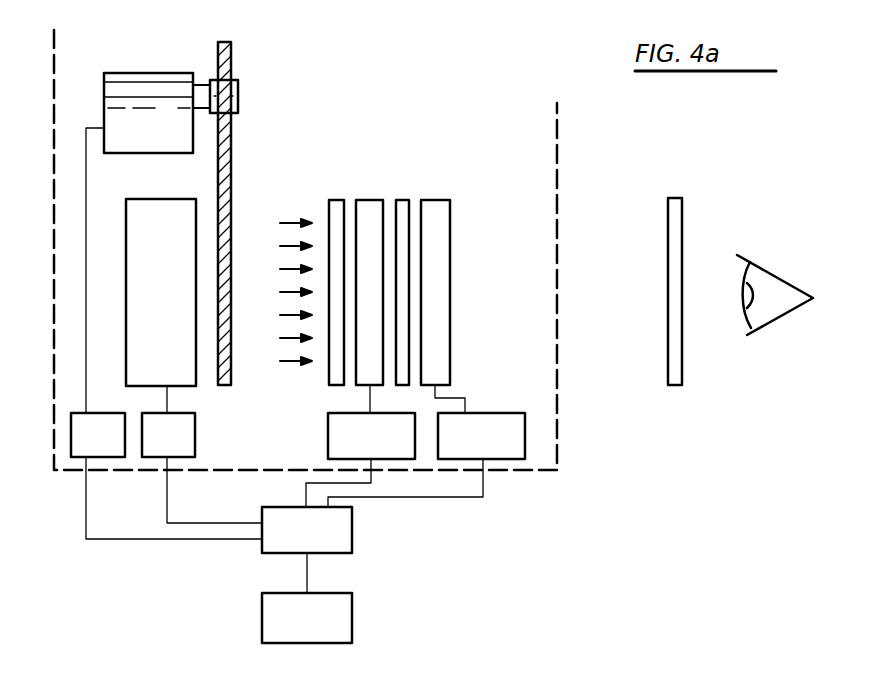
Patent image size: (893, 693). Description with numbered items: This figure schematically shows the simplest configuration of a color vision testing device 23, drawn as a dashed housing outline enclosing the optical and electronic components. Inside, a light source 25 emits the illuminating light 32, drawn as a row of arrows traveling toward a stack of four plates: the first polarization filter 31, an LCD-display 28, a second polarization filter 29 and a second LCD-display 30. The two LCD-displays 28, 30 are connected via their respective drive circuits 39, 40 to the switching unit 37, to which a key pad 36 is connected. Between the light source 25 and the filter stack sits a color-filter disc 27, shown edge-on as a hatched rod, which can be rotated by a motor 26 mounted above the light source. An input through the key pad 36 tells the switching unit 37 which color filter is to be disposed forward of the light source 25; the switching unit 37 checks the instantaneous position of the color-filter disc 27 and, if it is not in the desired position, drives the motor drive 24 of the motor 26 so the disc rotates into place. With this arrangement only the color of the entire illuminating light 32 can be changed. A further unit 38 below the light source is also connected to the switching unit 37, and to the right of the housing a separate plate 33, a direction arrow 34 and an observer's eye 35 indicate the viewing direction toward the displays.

The color vision testing device 23 is at (54, 278).
The motor drive 24 is at (114, 449).
The light source 25 is at (160, 208).
The motor 26 is at (148, 77).
The color-filter disc 27 is at (232, 213).
The LCD-display 28 is at (370, 208).
The polarization filter 29 is at (403, 206).
The LCD-display 30 is at (437, 208).
The first polarization filter 31 is at (336, 205).
The illuminating light 32 is at (290, 222).
The plate 33 is at (677, 197).
The direction 34 is at (663, 183).
The eye of observer 35 is at (775, 295).
The key pad 36 is at (322, 632).
The switching unit 37 is at (322, 545).
The control unit 38 is at (184, 449).
The drive circuit 39 is at (386, 450).
The drive circuit 40 is at (496, 450).